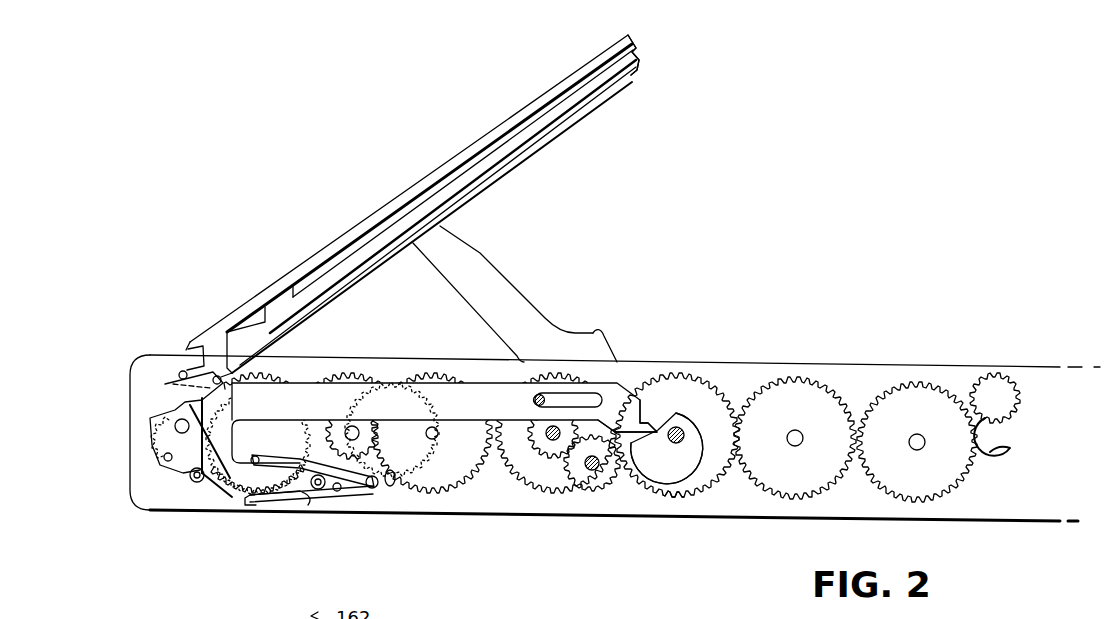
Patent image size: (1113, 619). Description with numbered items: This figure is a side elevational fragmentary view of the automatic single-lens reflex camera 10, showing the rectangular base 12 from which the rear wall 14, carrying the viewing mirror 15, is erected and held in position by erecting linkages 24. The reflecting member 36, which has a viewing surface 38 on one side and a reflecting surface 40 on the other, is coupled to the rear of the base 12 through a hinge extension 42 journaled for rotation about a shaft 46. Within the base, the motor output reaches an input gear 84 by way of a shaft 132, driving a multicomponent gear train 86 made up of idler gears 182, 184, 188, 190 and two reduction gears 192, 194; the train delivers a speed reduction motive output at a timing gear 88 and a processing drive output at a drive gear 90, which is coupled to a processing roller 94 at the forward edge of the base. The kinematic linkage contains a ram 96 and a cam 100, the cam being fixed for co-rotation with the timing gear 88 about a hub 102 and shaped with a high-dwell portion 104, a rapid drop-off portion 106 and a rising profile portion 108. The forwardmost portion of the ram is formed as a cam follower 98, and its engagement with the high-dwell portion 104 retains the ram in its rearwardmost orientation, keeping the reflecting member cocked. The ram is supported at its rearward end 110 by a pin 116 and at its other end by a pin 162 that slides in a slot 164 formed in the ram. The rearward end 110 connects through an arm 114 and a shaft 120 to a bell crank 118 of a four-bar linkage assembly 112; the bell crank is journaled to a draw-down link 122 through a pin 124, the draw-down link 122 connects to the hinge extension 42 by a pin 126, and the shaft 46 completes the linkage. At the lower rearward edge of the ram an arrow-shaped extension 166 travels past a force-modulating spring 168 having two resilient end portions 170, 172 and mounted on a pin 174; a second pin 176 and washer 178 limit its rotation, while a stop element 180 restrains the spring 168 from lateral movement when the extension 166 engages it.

The camera 10 is at (331, 214).
The base 12 is at (128, 420).
The rear wall 14 is at (533, 108).
The mirror 15 is at (485, 153).
The erecting linkages 24 is at (484, 272).
The reflecting member 36 is at (650, 50).
The viewing surface 38 is at (412, 218).
The reflecting surface 40 is at (505, 172).
The hinge extension 42 is at (188, 366).
The shaft 46 is at (180, 372).
The input gear 84 is at (160, 435).
The gear train 86 is at (520, 528).
The timing gear 88 is at (686, 392).
The drive gear 90 is at (1000, 395).
The processing roller 94 is at (1004, 447).
The ram 96 is at (354, 392).
The cam follower 98 is at (647, 458).
The cam 100 is at (687, 460).
The hub 102 is at (677, 426).
The high-dwell portion 104 is at (637, 473).
The rapid drop-off portion 106 is at (667, 448).
The rising profile portion 108 is at (677, 487).
The rearward end 110 is at (254, 397).
The four-bar linkage assembly 112 is at (152, 462).
The arm 114 is at (200, 487).
The pin 116 is at (222, 420).
The bell crank 118 is at (190, 474).
The shaft 120 is at (201, 483).
The draw-down link 122 is at (173, 388).
The pin 124 is at (165, 460).
The pin 126 is at (216, 376).
The shaft 132 is at (175, 408).
The pin 162 is at (598, 331).
The slot 164 is at (595, 397).
The extension 166 is at (233, 490).
The force-modulating spring 168 is at (317, 506).
The end portion 170 is at (293, 460).
The end portion 172 is at (278, 499).
The pin 174 is at (386, 488).
The second pin 176 is at (341, 490).
The washer 178 is at (310, 498).
The stop element 180 is at (397, 478).
The idler gear 182 is at (460, 489).
The idler gear 184 is at (538, 473).
The idler gear 188 is at (818, 482).
The idler gear 190 is at (953, 478).
The reduction gear 192 is at (264, 368).
The reduction gear 194 is at (392, 430).